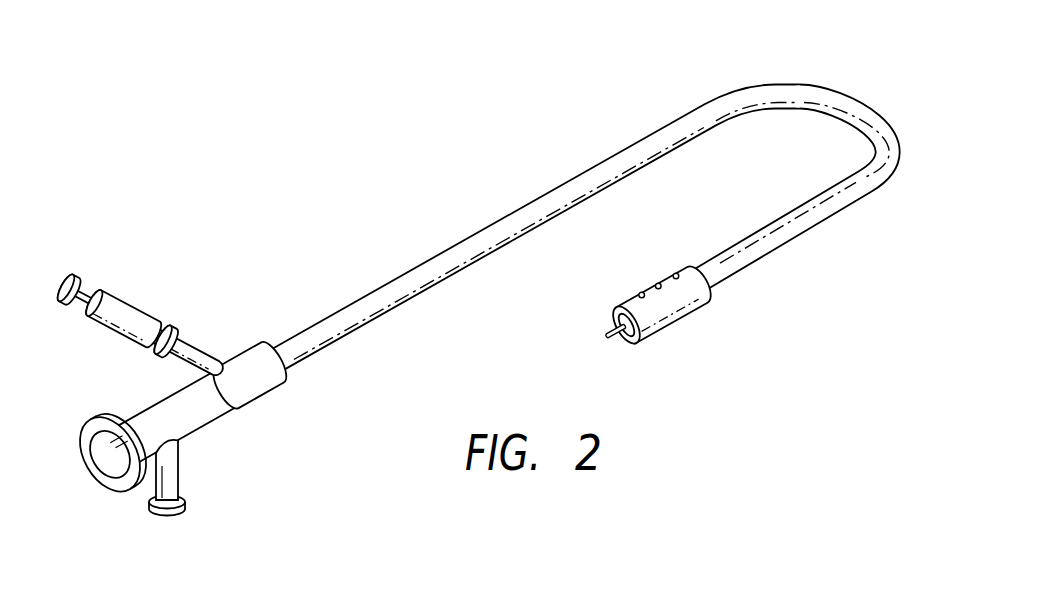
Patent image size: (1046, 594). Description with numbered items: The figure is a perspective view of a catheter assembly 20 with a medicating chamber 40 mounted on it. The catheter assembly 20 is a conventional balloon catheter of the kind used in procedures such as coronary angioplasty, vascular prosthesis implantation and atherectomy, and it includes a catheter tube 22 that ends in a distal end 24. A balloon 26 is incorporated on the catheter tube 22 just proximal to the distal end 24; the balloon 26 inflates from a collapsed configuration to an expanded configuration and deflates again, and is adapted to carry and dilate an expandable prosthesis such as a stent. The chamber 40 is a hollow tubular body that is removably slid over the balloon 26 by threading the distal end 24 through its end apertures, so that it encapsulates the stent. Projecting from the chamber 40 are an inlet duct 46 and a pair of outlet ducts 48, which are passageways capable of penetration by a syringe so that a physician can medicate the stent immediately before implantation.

The catheter assembly 20 is at (236, 200).
The catheter tube 22 is at (508, 218).
The distal end 24 is at (732, 264).
The balloon 26 is at (614, 325).
The chamber 40 is at (660, 323).
The inlet duct 46 is at (659, 283).
The outlet ducts 48 is at (641, 292).